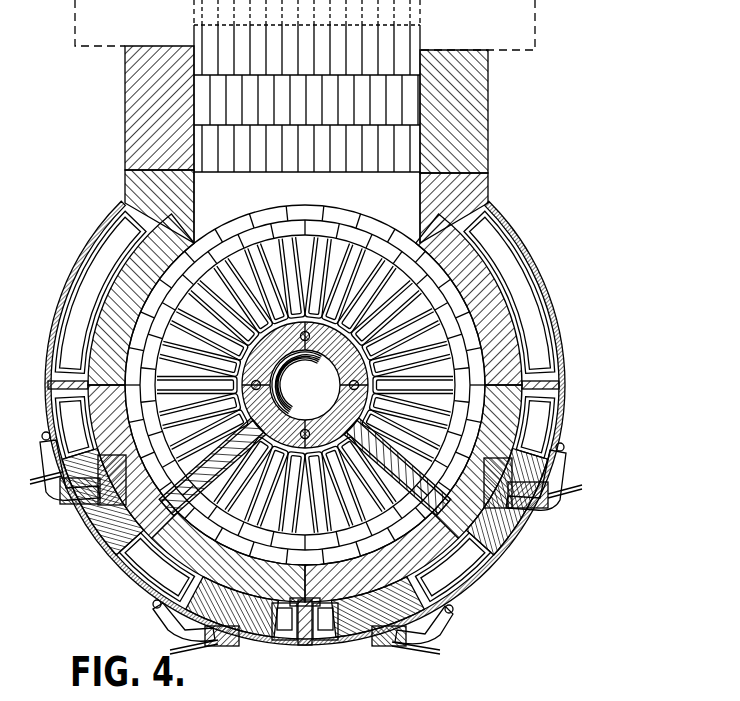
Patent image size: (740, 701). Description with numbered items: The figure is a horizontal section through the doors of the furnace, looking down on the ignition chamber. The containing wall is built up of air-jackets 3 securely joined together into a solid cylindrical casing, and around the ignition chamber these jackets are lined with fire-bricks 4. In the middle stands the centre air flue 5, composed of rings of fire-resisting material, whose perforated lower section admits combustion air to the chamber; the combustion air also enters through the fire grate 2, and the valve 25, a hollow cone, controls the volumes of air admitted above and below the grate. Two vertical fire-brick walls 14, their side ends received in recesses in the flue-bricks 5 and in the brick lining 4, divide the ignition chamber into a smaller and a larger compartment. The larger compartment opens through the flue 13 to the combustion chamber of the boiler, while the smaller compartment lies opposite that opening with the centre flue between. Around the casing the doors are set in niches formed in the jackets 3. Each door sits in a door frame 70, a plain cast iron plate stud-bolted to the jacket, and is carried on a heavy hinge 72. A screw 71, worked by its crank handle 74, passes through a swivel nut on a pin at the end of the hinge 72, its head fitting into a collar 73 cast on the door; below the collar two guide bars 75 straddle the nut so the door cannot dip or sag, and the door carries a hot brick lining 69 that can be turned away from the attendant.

The fire-grate 2 is at (452, 405).
The air-jackets 3 is at (530, 322).
The fire-bricks 4 is at (497, 268).
The centre air flue 5 is at (443, 352).
The flue 13 is at (386, 173).
The vertical fire-brick walls 14 is at (122, 517).
The valve 25 is at (147, 337).
The brick lining 69 is at (350, 608).
The door frame 70 is at (412, 606).
The screw 71 is at (408, 645).
The hinge 72 is at (440, 598).
The collar 73 is at (395, 617).
The crank handle 74 is at (470, 522).
The guide bars 75 is at (540, 486).